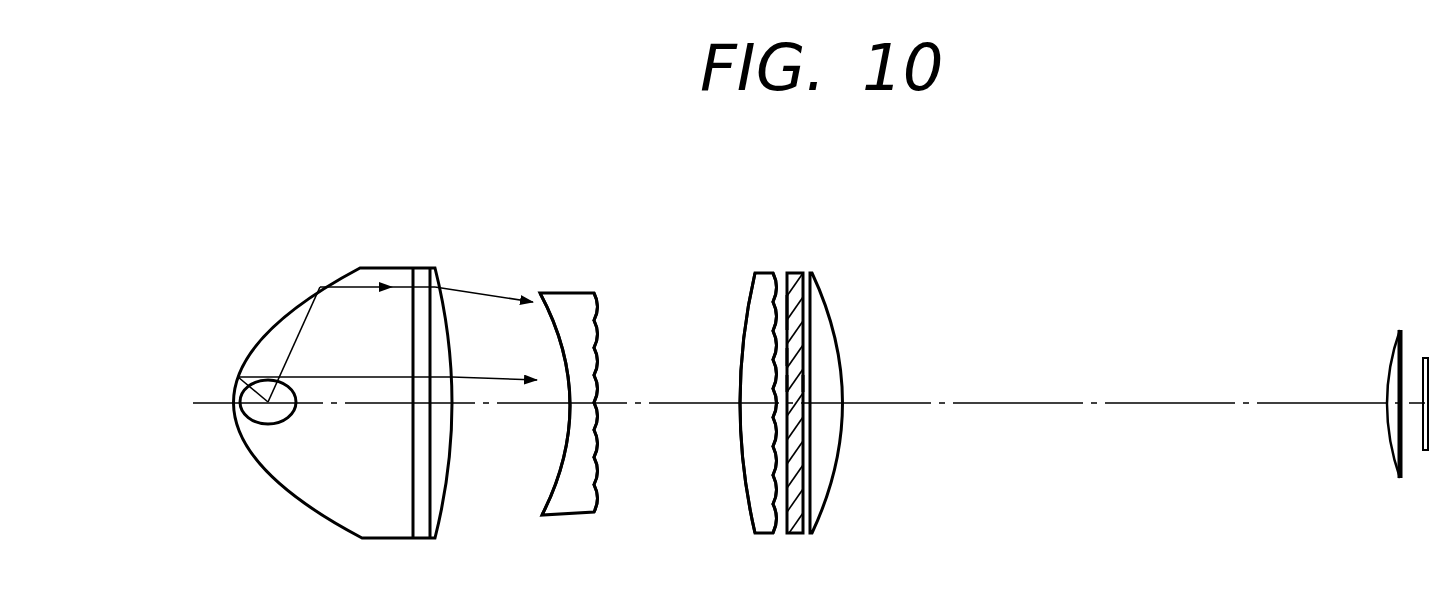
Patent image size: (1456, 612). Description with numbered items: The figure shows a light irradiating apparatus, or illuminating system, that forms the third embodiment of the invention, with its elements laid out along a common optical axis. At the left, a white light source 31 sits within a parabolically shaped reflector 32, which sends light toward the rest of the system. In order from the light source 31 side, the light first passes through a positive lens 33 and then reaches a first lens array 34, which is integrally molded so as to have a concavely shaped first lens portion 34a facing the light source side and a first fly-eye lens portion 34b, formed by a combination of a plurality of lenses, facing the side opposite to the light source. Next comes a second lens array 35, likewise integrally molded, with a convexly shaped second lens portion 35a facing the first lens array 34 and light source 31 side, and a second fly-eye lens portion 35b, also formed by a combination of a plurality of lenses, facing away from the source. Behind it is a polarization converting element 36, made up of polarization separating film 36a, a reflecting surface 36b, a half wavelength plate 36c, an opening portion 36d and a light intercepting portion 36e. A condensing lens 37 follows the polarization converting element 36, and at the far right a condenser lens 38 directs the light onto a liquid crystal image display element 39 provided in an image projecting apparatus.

The white light source 31 is at (260, 424).
The parabolically shaped reflector 32 is at (338, 270).
The positive lens 33 is at (437, 270).
The first lens array 34 is at (507, 199).
The first lens portion 34a is at (541, 291).
The first fly-eye lens portion 34b is at (596, 291).
The second lens array 35 is at (667, 186).
The second lens portion 35a is at (750, 280).
The second fly-eye lens portion 35b is at (773, 290).
The polarization converting element 36 is at (793, 271).
The polarization separating film 36a is at (787, 383).
The reflecting surface 36b is at (787, 357).
The half wavelength plate 36c is at (800, 388).
The opening portion 36d is at (787, 318).
The light intercepting portion 36e is at (787, 303).
The condensing lens 37 is at (825, 327).
The condenser lens 38 is at (1400, 327).
The liquid crystal image display element 39 is at (1426, 356).